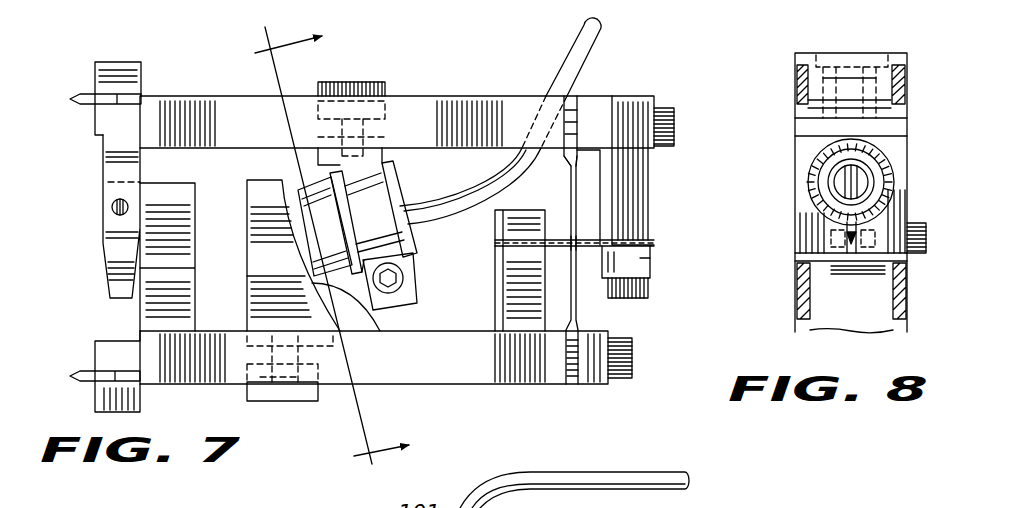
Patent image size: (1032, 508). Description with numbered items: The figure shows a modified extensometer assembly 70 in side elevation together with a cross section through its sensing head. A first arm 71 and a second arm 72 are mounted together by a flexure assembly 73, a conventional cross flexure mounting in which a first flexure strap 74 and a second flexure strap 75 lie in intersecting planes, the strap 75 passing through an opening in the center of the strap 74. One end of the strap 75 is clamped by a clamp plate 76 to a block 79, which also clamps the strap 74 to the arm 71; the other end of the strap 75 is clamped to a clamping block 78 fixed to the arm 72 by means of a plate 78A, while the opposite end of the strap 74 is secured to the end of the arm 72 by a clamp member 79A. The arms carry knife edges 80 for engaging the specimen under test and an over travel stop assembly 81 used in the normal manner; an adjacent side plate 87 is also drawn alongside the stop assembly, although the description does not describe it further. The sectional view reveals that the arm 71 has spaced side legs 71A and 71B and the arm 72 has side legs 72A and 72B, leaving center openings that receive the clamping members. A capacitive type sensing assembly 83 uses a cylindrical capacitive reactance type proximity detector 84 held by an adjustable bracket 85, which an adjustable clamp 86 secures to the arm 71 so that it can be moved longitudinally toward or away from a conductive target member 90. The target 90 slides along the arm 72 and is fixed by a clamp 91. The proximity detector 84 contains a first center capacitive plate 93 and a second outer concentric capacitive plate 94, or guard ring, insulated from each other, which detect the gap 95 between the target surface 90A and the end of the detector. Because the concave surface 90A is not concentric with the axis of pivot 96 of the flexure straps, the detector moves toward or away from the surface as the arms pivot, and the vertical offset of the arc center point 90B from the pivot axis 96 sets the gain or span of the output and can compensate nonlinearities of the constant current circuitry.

In FIG. 7, the extensometer assembly 70 is at (460, 95).
In FIG. 7, the first arm 71 is at (406, 113).
In FIG. 8, the side leg 71A is at (798, 78).
In FIG. 8, the side leg 71B is at (906, 78).
In FIG. 7, the second arm 72 is at (466, 376).
In FIG. 8, the side leg 72A is at (797, 300).
In FIG. 8, the side leg 72B is at (906, 300).
In FIG. 7, the flexure assembly 73 is at (585, 284).
In FIG. 7, the first flexure strap 74 is at (578, 113).
In FIG. 7, the second flexure strap 75 is at (626, 240).
In FIG. 7, the clamp plate 76 is at (638, 263).
In FIG. 7, the clamping block 78 is at (520, 272).
In FIG. 7, the plate 78A is at (523, 225).
In FIG. 7, the block 79 is at (636, 195).
In FIG. 7, the clamp member 79A is at (591, 386).
In FIG. 7, the knife edges 80 is at (82, 97).
In FIG. 7, the over travel stop assembly 81 is at (176, 200).
In FIG. 7, the capacitive type sensing assembly 83 is at (352, 208).
In FIG. 7, the capacitive reactance type proximity detector 84 is at (396, 184).
In FIG. 8, the capacitive reactance type proximity detector 84 is at (815, 158).
In FIG. 7, the adjustable bracket 85 is at (412, 303).
In FIG. 7, the adjustable clamp 86 is at (344, 82).
In FIG. 7, the side plate 87 is at (104, 172).
In FIG. 7, the conductive target member 90 is at (250, 278).
In FIG. 7, the target surface 90A is at (358, 331).
In FIG. 7, the center point 90B is at (575, 156).
In FIG. 7, the clamp 91 is at (278, 404).
In FIG. 8, the first center capacitive plate 93 is at (840, 195).
In FIG. 8, the second outer concentric capacitive plate 94 is at (824, 190).
In FIG. 7, the gap 95 is at (292, 210).
In FIG. 7, the axis of pivot 96 is at (571, 240).